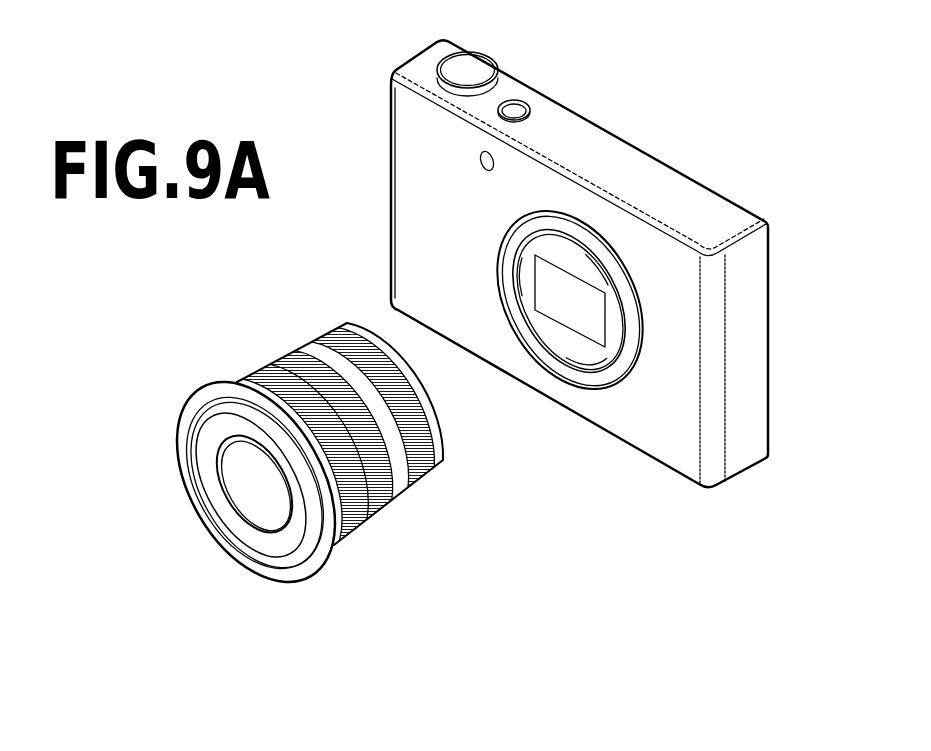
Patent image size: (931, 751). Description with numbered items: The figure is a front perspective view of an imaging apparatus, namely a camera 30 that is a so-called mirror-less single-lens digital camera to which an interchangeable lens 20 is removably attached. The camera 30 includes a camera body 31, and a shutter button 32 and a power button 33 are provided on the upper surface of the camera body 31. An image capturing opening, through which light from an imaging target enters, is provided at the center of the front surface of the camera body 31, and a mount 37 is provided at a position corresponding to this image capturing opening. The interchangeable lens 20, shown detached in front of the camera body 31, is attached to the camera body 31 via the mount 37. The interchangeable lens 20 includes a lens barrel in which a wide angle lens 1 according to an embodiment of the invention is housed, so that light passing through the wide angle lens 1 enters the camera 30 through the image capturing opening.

The wide angle lens 1 is at (260, 503).
The interchangeable lens 20 is at (293, 473).
The camera 30 is at (612, 243).
The camera body 31 is at (758, 313).
The shutter button 32 is at (476, 62).
The power button 33 is at (517, 105).
The mount 37 is at (599, 370).